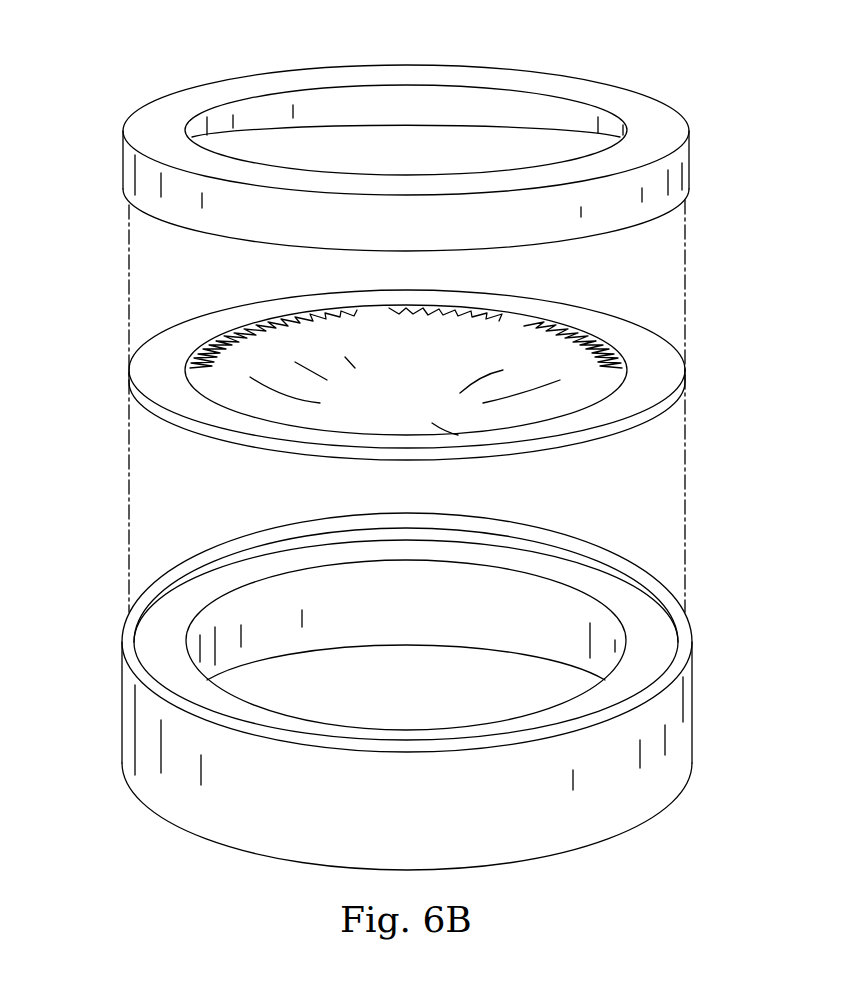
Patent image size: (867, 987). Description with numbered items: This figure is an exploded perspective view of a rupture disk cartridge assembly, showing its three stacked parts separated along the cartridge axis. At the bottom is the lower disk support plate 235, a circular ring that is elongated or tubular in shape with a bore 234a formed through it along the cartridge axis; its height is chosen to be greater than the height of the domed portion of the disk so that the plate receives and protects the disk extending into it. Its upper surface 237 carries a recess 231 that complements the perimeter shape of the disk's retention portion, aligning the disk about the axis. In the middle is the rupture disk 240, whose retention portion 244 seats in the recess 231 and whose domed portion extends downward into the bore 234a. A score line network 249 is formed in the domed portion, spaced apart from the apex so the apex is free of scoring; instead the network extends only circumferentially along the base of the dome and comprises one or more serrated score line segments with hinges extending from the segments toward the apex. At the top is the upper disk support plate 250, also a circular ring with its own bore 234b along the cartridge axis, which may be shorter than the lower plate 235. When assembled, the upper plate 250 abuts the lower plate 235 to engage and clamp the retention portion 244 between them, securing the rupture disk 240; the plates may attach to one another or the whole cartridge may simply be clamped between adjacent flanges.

The upper disk support plate 250 is at (196, 87).
The bore 234b is at (562, 113).
The rupture disk 240 is at (125, 376).
The retention portion 244 is at (687, 383).
The score line network 249 is at (592, 348).
The recess 231 is at (252, 570).
The bore 234a is at (597, 618).
The surface 237 is at (688, 627).
The lower disk support plate 235 is at (620, 834).